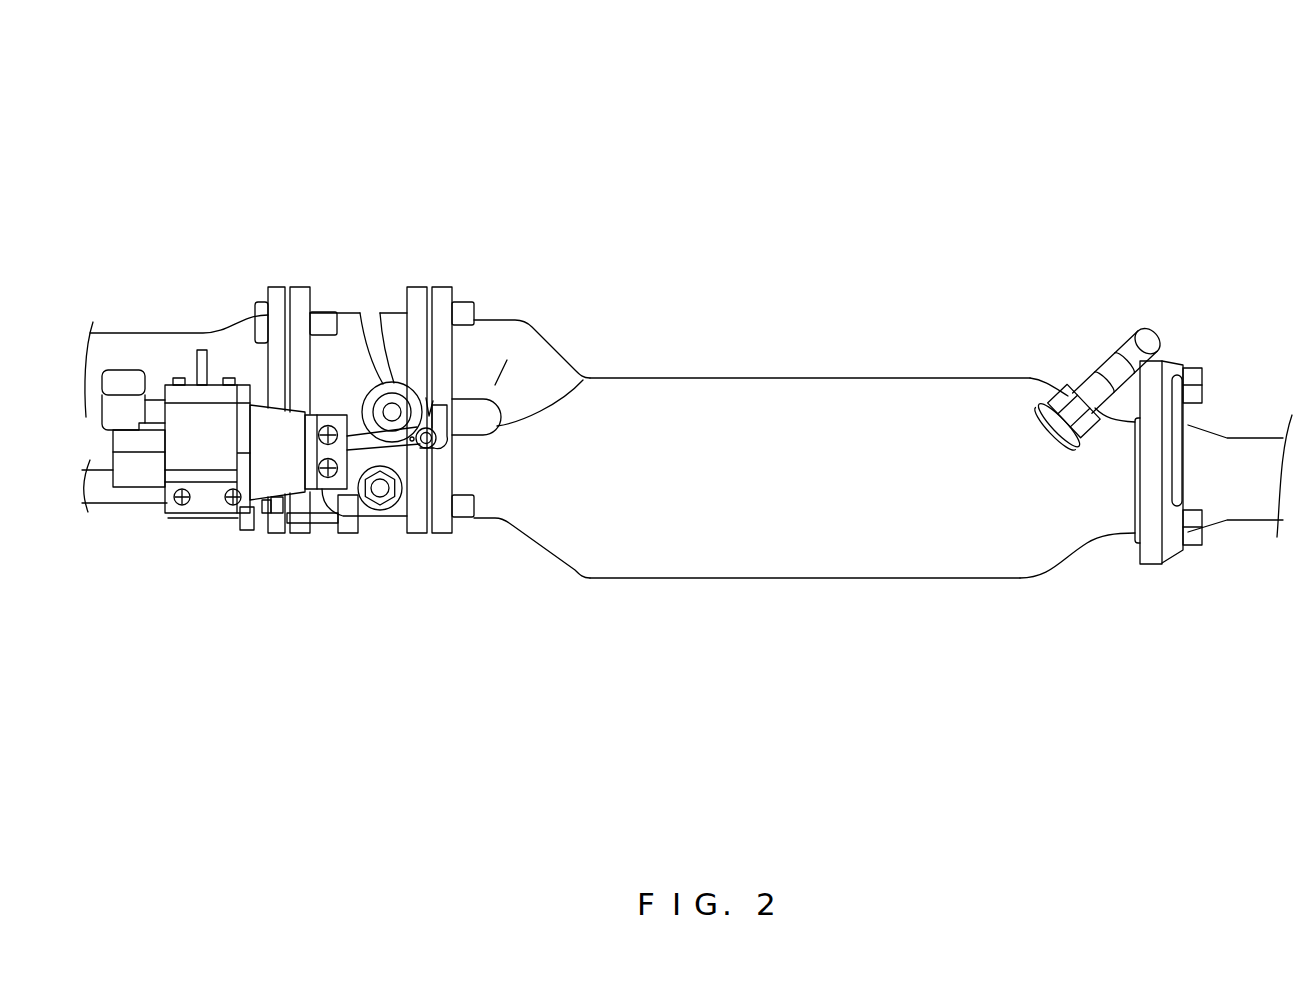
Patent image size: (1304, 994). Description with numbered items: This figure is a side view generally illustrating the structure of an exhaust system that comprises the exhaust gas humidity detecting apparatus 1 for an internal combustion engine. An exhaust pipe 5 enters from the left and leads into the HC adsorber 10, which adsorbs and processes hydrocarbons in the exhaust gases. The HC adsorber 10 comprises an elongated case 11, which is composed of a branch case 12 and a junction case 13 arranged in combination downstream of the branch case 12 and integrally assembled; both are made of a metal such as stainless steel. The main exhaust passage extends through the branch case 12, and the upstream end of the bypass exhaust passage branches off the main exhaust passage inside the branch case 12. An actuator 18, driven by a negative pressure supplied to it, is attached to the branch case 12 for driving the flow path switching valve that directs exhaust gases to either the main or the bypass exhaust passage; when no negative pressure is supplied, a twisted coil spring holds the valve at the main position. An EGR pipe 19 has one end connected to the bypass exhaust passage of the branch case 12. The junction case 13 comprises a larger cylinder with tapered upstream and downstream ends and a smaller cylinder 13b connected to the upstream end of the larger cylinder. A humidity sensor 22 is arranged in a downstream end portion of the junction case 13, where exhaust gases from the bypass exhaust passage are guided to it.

The exhaust gas humidity detecting apparatus 1 is at (1058, 128).
The exhaust pipe 5 is at (147, 332).
The HC adsorber 10 is at (828, 280).
The case 11 is at (727, 377).
The branch case 12 is at (312, 523).
The junction case 13 is at (871, 378).
The smaller cylinder 13b is at (548, 344).
The actuator 18 is at (198, 503).
The EGR pipe 19 is at (102, 503).
The humidity sensor 22 is at (1145, 322).